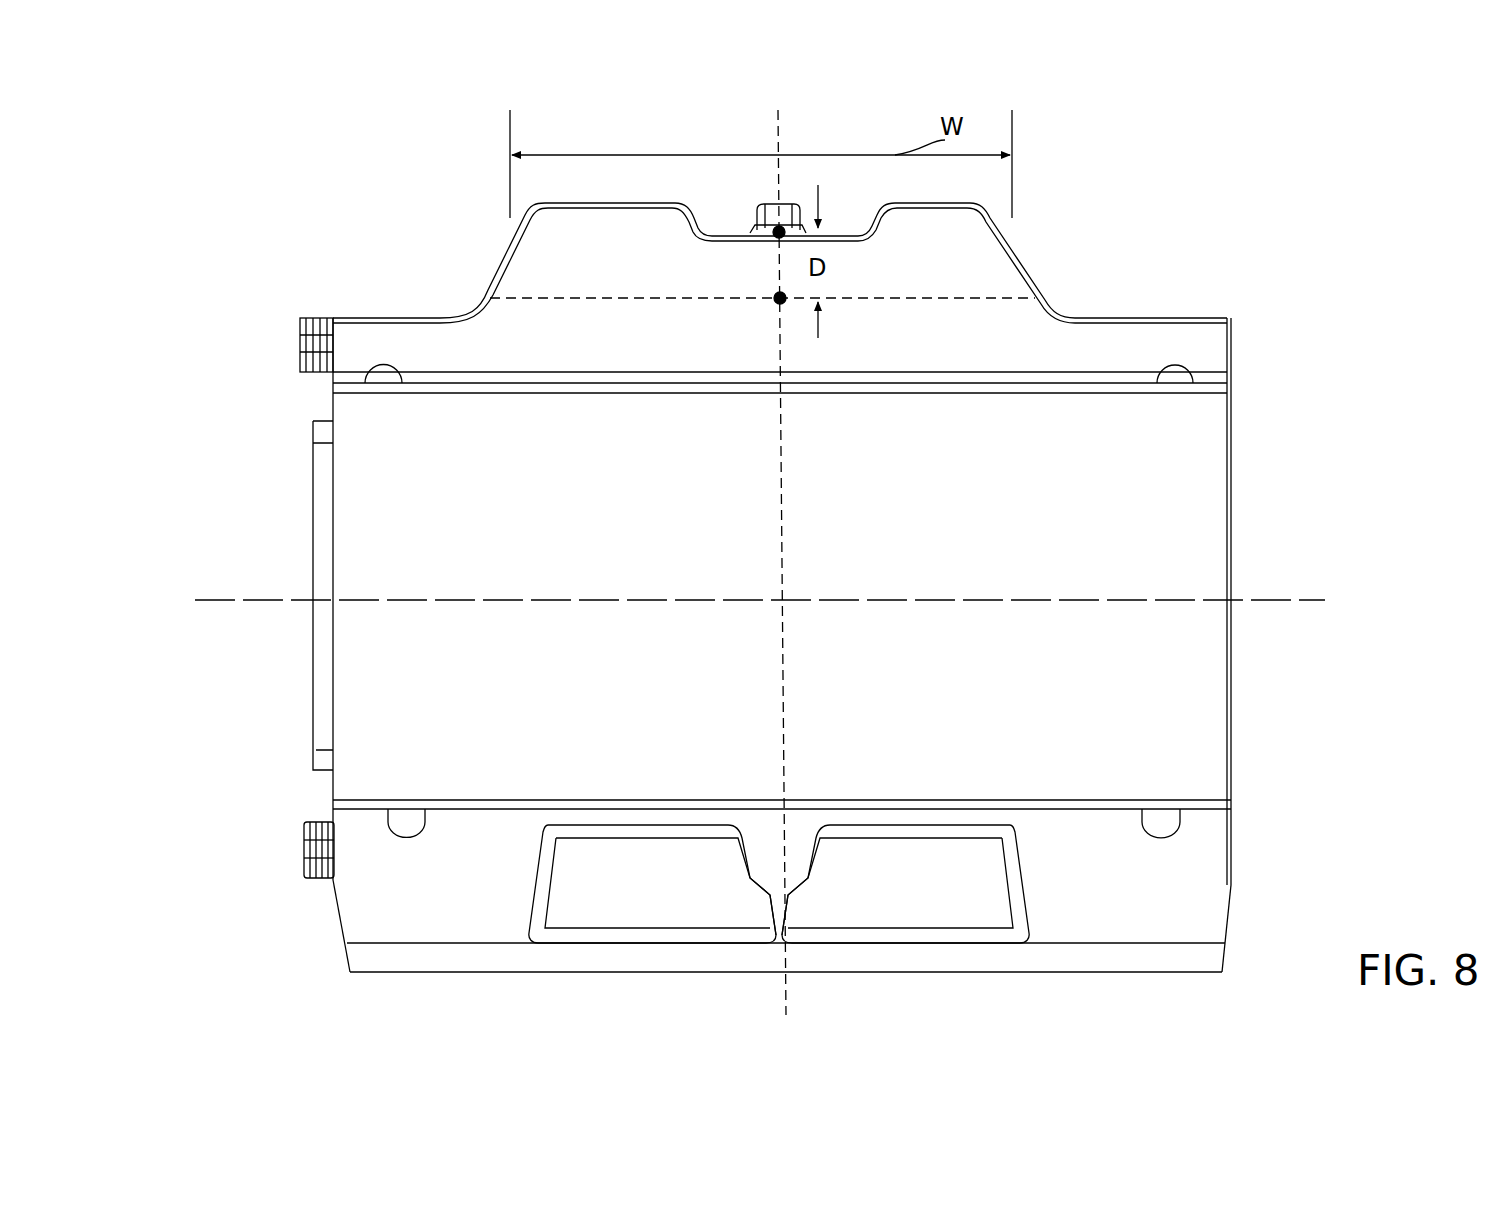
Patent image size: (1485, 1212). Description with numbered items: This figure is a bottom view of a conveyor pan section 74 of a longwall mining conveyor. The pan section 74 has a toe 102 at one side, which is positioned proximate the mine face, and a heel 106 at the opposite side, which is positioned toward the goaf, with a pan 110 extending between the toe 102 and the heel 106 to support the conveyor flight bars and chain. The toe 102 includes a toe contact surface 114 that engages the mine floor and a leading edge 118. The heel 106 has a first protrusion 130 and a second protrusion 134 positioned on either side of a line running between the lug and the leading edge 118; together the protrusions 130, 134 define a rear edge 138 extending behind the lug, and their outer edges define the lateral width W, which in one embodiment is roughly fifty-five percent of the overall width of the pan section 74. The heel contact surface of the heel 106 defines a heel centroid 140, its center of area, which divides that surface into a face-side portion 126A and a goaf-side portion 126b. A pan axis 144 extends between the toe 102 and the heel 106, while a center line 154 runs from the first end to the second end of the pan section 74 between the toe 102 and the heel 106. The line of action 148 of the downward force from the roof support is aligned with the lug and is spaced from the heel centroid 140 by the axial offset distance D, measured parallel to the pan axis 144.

The pan section 74 is at (186, 292).
The toe 102 is at (1250, 878).
The heel 106 is at (400, 270).
The pan 110 is at (370, 525).
The toe contact surface 114 is at (1162, 905).
The leading edge 118 is at (763, 972).
The face-side portion 126A is at (1030, 345).
The goaf-side portion 126b is at (990, 300).
The first protrusion 130 is at (990, 245).
The second protrusion 134 is at (553, 236).
The rear edge 138 is at (910, 200).
The heel centroid 140 is at (775, 303).
The pan axis 144 is at (782, 425).
The line of action 148 is at (762, 225).
The center line 154 is at (1045, 600).